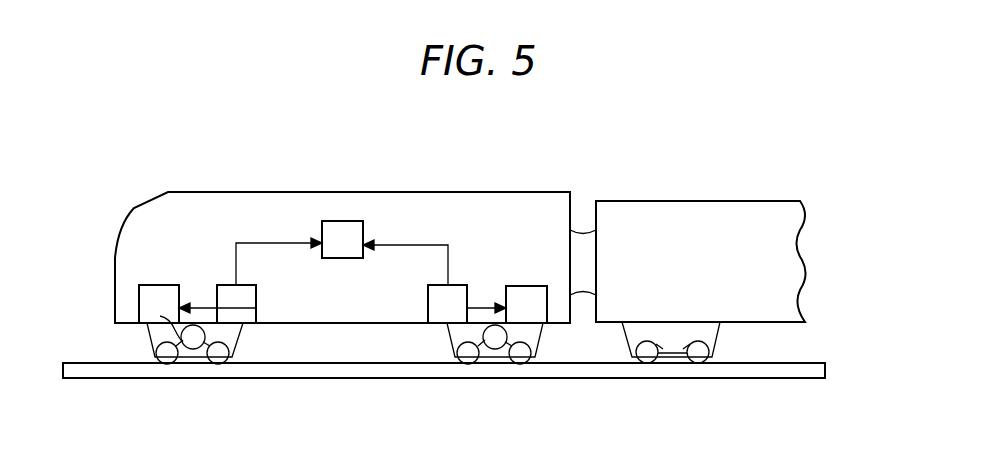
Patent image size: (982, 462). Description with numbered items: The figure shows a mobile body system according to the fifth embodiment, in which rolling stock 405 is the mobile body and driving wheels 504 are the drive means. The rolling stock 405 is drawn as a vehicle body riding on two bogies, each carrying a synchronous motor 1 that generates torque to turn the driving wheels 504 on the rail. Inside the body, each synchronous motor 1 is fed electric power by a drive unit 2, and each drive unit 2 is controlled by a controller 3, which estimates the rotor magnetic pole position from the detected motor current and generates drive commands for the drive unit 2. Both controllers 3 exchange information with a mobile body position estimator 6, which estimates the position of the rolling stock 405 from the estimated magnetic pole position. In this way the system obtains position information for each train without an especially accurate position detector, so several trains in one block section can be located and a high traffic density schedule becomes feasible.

The rolling stock 405 is at (383, 203).
The mobile body position estimator 6 is at (343, 232).
The controller 3 is at (438, 303).
The drive unit 2 is at (160, 286).
The synchronous motor 1 is at (205, 335).
The driving wheels 504 is at (212, 358).